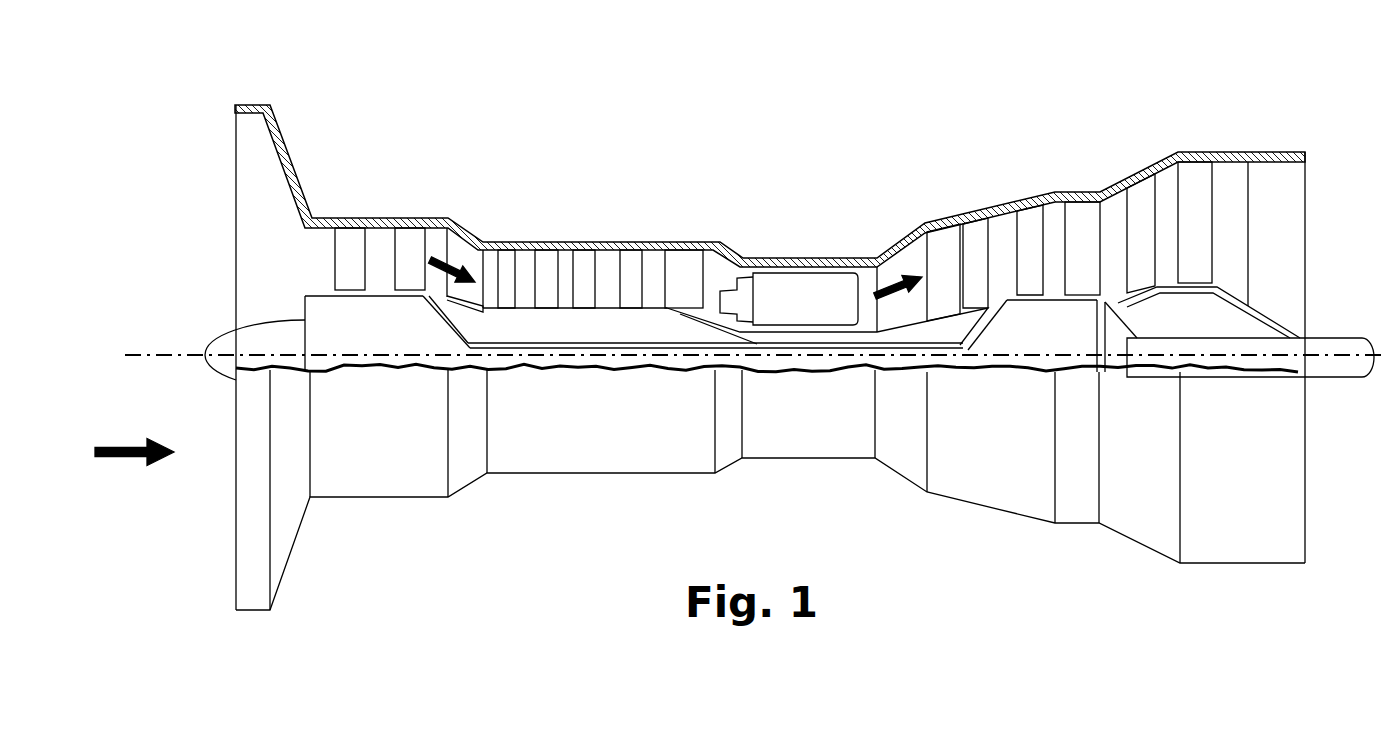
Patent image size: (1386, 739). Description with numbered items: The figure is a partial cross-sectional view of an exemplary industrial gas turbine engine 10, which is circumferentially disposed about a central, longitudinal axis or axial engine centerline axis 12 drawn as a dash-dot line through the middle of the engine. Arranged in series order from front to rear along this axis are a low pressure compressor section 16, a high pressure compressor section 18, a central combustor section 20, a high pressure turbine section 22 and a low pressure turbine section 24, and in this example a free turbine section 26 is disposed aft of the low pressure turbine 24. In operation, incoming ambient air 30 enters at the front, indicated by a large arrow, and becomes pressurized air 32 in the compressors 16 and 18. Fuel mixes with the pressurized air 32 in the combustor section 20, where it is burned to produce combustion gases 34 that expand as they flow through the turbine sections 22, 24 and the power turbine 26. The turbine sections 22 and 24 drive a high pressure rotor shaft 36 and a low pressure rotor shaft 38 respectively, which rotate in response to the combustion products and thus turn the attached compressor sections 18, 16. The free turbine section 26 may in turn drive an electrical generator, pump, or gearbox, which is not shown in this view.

The industrial gas turbine engine 10 is at (875, 100).
The axial engine centerline axis 12 is at (168, 354).
The low pressure compressor section 16 is at (373, 204).
The high pressure compressor section 18 is at (622, 214).
The central combustor section 20 is at (782, 287).
The high pressure turbine section 22 is at (976, 190).
The low pressure turbine section 24 is at (1088, 175).
The free turbine section 26 is at (1244, 148).
The incoming ambient air 30 is at (131, 447).
The pressurized air 32 is at (452, 266).
The combustion gases 34 is at (890, 278).
The high pressure rotor shaft 36 is at (797, 233).
The low pressure rotor shaft 38 is at (463, 333).